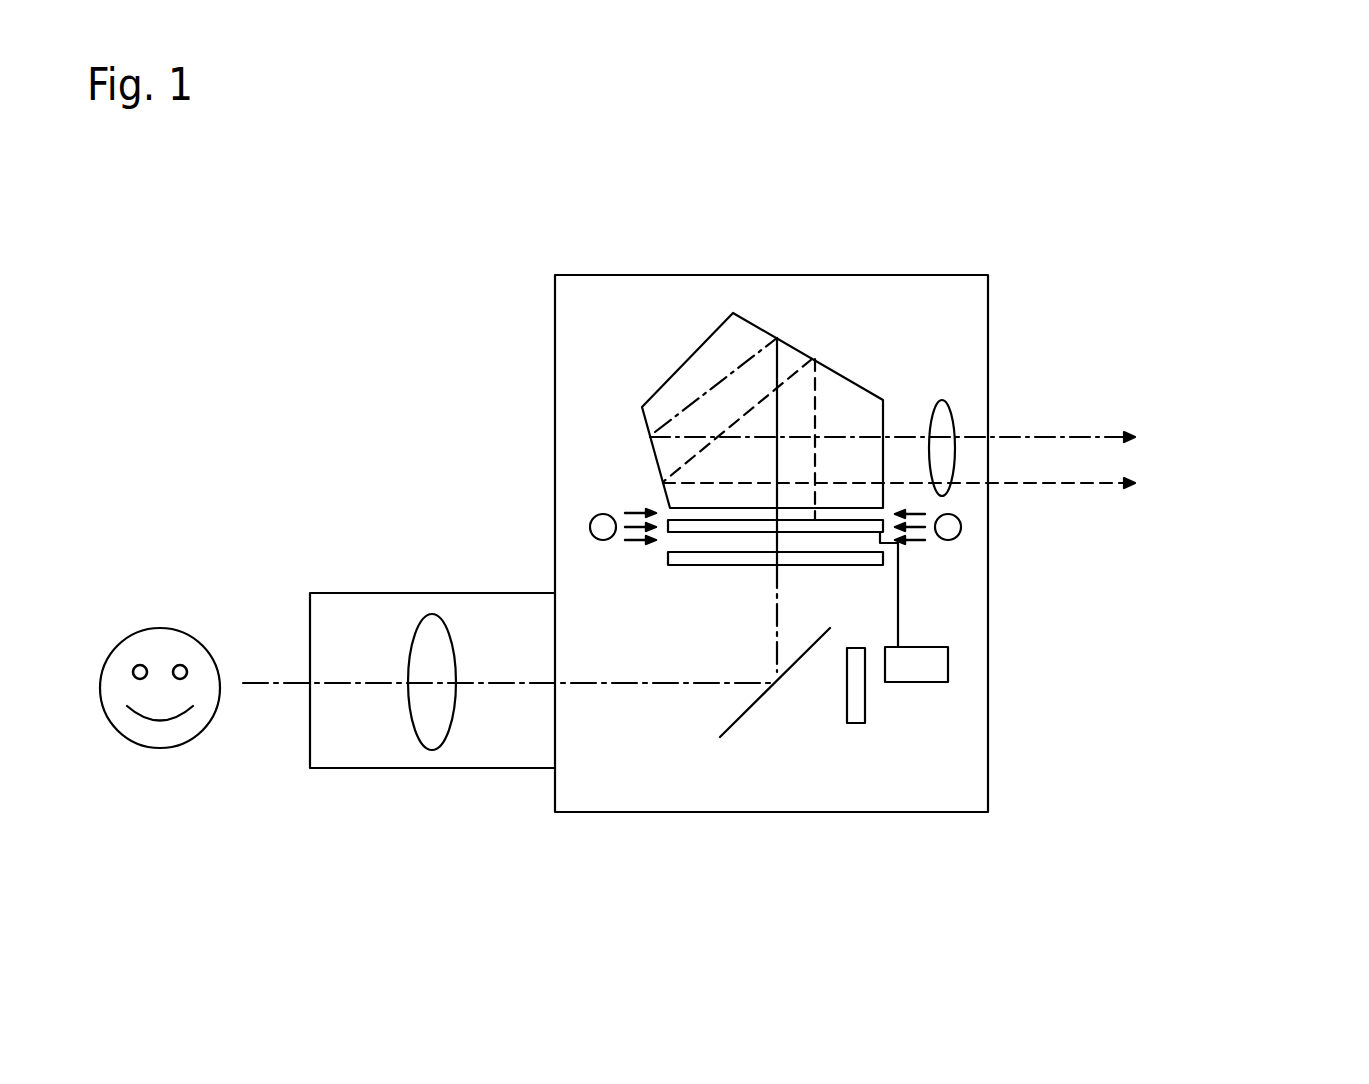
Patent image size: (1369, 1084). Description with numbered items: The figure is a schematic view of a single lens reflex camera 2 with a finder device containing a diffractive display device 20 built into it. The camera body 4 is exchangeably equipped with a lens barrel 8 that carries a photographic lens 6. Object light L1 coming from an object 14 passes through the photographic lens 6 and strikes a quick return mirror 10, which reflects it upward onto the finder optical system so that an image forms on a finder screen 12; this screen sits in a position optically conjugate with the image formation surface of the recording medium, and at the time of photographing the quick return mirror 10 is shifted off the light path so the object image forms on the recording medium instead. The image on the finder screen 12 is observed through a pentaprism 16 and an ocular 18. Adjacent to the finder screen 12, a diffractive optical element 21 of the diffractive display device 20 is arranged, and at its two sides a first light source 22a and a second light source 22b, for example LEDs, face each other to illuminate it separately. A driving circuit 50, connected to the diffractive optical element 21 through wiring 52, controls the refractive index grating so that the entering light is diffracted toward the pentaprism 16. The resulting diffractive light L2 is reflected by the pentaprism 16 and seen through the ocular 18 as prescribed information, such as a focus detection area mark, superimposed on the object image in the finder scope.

The single lens reflex camera 2 is at (613, 257).
The camera body 4 is at (555, 308).
The photographic lens 6 is at (432, 750).
The lens barrel 8 is at (328, 593).
The quick return mirror 10 is at (747, 713).
The finder screen 12 is at (685, 565).
The object 14 is at (160, 630).
The pentaprism 16 is at (750, 320).
The ocular 18 is at (943, 400).
The diffractive display device 20 is at (594, 663).
The diffractive optical element 21 is at (707, 525).
The first light source 22a is at (590, 527).
The second light source 22b is at (961, 530).
The driving circuit 50 is at (917, 683).
The wiring 52 is at (898, 612).
The object light L1 is at (1057, 437).
The diffractive light L2 is at (1017, 485).